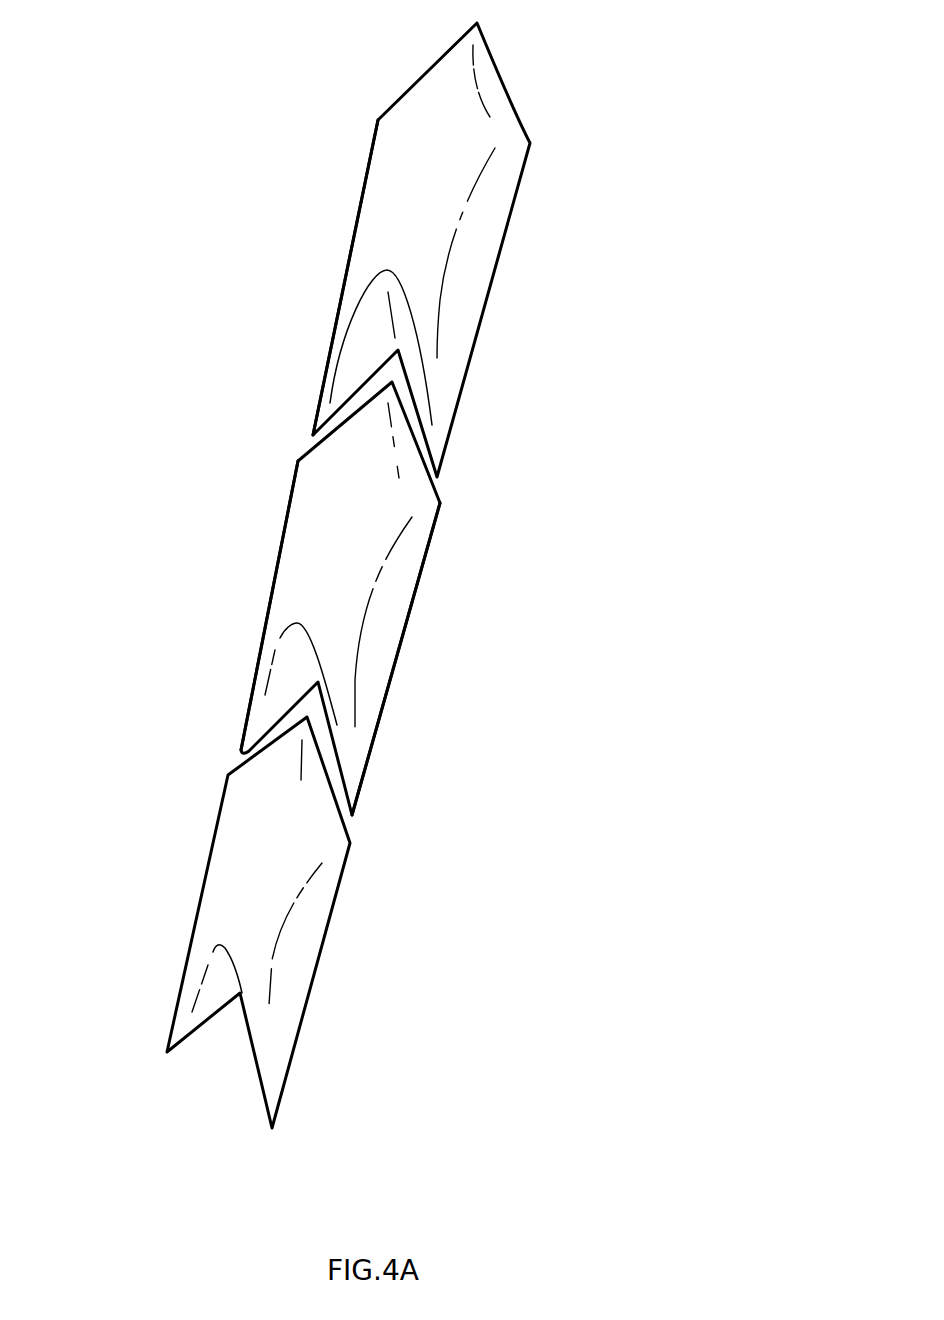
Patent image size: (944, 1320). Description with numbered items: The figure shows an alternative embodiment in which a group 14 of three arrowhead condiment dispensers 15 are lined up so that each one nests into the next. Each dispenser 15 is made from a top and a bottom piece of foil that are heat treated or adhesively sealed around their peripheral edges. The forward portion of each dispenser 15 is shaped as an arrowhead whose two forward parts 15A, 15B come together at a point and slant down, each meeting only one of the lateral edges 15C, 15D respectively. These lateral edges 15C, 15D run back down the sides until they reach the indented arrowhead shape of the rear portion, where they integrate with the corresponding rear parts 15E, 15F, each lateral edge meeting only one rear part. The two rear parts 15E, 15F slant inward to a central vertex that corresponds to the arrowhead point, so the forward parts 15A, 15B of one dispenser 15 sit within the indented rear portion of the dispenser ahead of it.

The group 14 is at (697, 387).
The condiment dispenser 15 is at (443, 593).
The forward part 15A is at (413, 432).
The forward part 15B is at (312, 440).
The lateral edge 15C is at (413, 640).
The lateral edge 15D is at (275, 563).
The rear part 15E is at (347, 747).
The rear part 15F is at (280, 711).